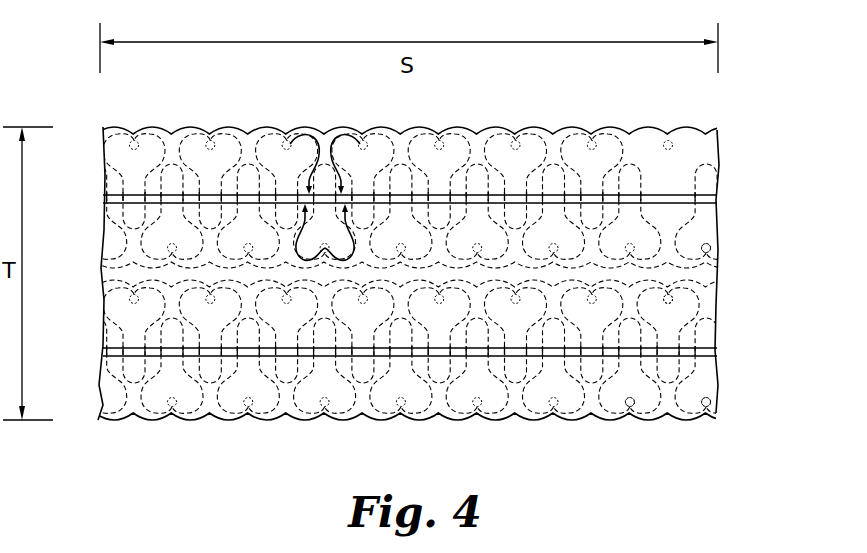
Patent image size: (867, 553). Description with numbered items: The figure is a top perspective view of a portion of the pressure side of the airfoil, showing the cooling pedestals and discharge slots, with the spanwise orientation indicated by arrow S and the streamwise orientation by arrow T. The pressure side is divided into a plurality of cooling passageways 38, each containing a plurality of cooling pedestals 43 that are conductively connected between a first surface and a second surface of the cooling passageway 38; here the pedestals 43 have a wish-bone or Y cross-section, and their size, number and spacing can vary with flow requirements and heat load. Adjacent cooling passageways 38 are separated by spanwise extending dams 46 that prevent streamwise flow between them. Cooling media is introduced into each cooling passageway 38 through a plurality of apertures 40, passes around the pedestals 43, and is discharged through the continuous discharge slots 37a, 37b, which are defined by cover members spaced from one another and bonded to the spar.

The discharge slot 37a is at (718, 350).
The discharge slot 37b is at (716, 200).
The cooling passageway 38 is at (708, 148).
The aperture 40 is at (669, 143).
The cooling pedestal 43 is at (650, 140).
The spanwise extending dam 46 is at (215, 133).